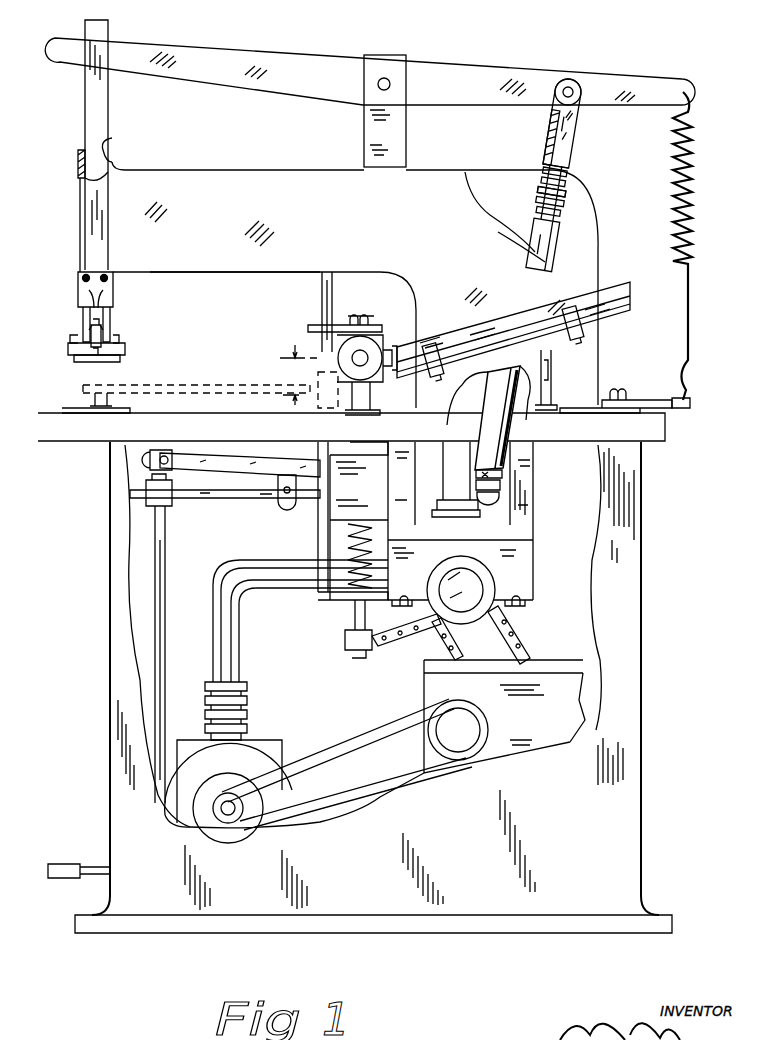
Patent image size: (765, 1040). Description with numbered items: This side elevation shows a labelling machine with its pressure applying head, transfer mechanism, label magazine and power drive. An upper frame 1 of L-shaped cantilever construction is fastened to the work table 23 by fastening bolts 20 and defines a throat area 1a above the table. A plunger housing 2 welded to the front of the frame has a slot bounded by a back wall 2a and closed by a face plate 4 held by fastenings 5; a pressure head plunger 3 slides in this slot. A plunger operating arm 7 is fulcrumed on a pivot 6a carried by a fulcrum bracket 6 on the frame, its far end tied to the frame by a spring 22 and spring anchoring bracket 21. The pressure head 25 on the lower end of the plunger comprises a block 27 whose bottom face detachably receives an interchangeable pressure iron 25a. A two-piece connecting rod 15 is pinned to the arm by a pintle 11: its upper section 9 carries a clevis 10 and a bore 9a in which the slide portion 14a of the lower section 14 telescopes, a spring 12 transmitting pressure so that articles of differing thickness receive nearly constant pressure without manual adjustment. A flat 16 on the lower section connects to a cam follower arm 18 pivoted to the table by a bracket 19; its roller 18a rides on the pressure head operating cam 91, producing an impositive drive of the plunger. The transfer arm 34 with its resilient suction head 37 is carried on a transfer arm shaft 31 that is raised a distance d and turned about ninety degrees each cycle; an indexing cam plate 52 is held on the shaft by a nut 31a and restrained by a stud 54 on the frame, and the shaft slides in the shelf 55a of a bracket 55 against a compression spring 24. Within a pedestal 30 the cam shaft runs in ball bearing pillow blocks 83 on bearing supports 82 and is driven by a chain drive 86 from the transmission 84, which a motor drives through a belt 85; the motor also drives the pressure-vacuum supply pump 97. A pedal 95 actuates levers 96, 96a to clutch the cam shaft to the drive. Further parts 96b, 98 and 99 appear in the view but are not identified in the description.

The upper frame 1 is at (278, 168).
The throat area 1a is at (228, 319).
The plunger housing 2 is at (112, 185).
The back wall 2a is at (113, 140).
The pressure head plunger 3 is at (108, 112).
The face plate 4 is at (80, 192).
The fastenings 5 is at (78, 160).
The fulcrum bracket 6 is at (406, 121).
The pivot 6a is at (382, 78).
The plunger operating arm 7 is at (285, 52).
The upper section of connecting rod 9 is at (578, 133).
The bore 9a is at (550, 128).
The clevis 10 is at (578, 98).
The pintle 11 is at (574, 86).
The spring 12 is at (566, 182).
The lower section of connecting rod 14 is at (552, 244).
The slide portion 14a is at (562, 200).
The connecting rod 15 is at (531, 158).
The flat 16 is at (503, 475).
The cam follower arm 18 is at (218, 460).
The cam follower roller 18a is at (502, 490).
The bracket 19 is at (172, 472).
The fastening bolts 20 is at (616, 393).
The spring anchoring bracket 21 is at (690, 404).
The spring 22 is at (695, 188).
The work table 23 is at (665, 430).
The compression spring 24 is at (350, 552).
The pressure head 25 is at (52, 353).
The pressure irons 25a is at (120, 360).
The block 27 is at (110, 345).
The pedestal 30 is at (108, 657).
The transfer arm shaft 31 is at (356, 618).
The nut 31a is at (372, 314).
The transfer arm 34 is at (182, 384).
The suction head 37 is at (108, 402).
The indexing cam plate 52 is at (312, 325).
The stud 54 is at (322, 292).
The bracket 55 is at (318, 540).
The shelf 55a is at (330, 598).
The bearing supports 82 is at (533, 512).
The ball bearing pillow blocks 83 is at (536, 568).
The transmission 84 is at (424, 695).
The belt 85 is at (380, 730).
The chain drive 86 is at (530, 628).
The pressure head operating cam 91 is at (470, 522).
The pedal 95 is at (64, 864).
The lever 96 is at (165, 550).
The lever 96a is at (215, 500).
The link 96b is at (284, 506).
The pressure-vacuum supply pump 97 is at (248, 706).
The pipe 98 is at (213, 596).
The pipe 99 is at (240, 620).